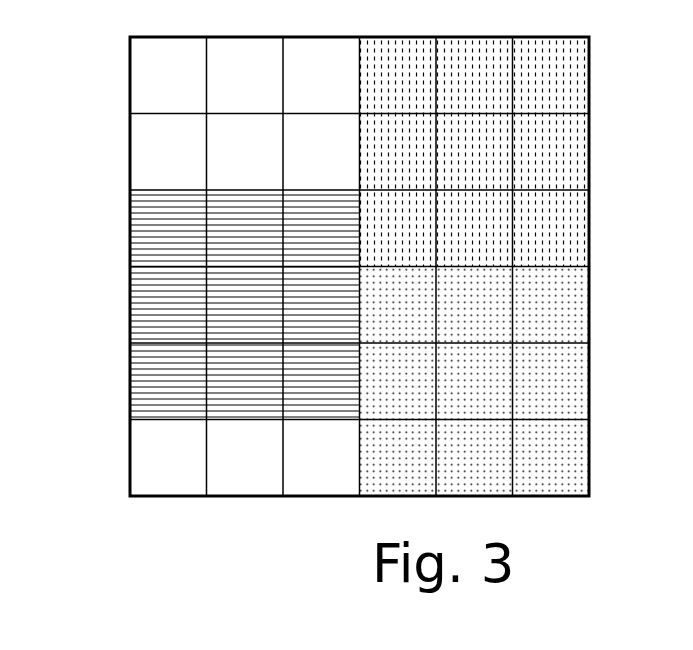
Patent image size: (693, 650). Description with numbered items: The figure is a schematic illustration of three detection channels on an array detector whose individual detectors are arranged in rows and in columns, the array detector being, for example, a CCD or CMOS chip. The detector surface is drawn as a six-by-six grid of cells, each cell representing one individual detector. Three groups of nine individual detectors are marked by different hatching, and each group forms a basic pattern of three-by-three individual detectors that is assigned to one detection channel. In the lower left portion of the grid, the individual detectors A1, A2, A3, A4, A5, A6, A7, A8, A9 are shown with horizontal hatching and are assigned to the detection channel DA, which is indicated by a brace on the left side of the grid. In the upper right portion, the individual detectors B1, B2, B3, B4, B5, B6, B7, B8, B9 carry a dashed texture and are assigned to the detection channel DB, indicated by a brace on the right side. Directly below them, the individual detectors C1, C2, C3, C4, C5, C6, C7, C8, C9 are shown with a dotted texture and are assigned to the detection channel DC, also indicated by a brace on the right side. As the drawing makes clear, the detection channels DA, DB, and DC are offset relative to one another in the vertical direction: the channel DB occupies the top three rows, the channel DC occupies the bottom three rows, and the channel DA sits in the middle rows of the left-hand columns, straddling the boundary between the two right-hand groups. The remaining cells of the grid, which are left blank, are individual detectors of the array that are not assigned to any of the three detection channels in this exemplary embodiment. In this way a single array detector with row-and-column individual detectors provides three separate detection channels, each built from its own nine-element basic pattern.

The individual detector A1 is at (168, 228).
The individual detector A2 is at (245, 228).
The individual detector A3 is at (321, 228).
The individual detector A4 is at (168, 305).
The individual detector A5 is at (245, 305).
The individual detector A6 is at (321, 305).
The individual detector A7 is at (168, 381).
The individual detector A8 is at (245, 381).
The individual detector A9 is at (321, 381).
The individual detector B1 is at (398, 75).
The individual detector B2 is at (474, 75).
The individual detector B3 is at (551, 75).
The individual detector B4 is at (398, 152).
The individual detector B5 is at (474, 152).
The individual detector B6 is at (551, 152).
The individual detector B7 is at (398, 228).
The individual detector B8 is at (474, 228).
The individual detector B9 is at (551, 228).
The individual detector C1 is at (398, 305).
The individual detector C2 is at (474, 305).
The individual detector C3 is at (551, 305).
The individual detector C4 is at (398, 381).
The individual detector C5 is at (474, 381).
The individual detector C6 is at (551, 381).
The individual detector C7 is at (398, 458).
The individual detector C8 is at (474, 458).
The individual detector C9 is at (551, 458).
The detection channel DA is at (196, 305).
The detection channel DB is at (525, 152).
The detection channel DC is at (526, 382).